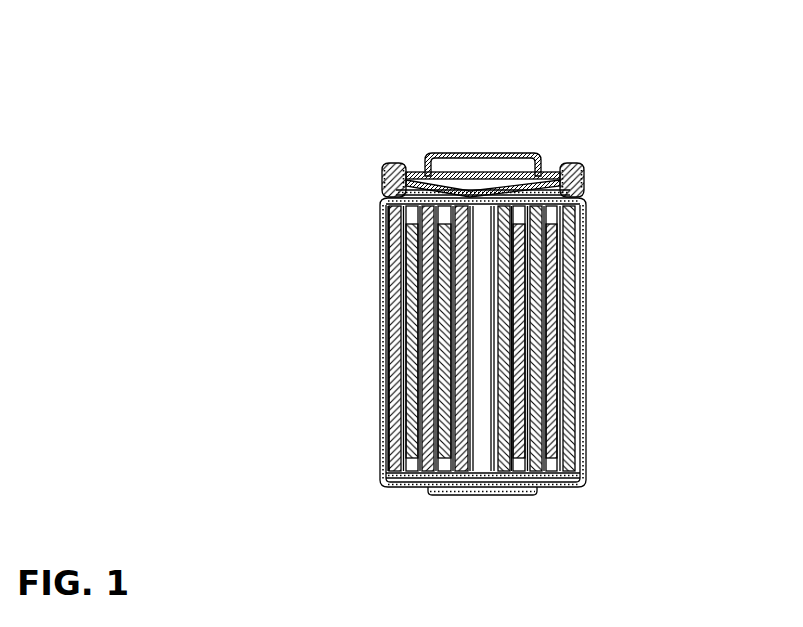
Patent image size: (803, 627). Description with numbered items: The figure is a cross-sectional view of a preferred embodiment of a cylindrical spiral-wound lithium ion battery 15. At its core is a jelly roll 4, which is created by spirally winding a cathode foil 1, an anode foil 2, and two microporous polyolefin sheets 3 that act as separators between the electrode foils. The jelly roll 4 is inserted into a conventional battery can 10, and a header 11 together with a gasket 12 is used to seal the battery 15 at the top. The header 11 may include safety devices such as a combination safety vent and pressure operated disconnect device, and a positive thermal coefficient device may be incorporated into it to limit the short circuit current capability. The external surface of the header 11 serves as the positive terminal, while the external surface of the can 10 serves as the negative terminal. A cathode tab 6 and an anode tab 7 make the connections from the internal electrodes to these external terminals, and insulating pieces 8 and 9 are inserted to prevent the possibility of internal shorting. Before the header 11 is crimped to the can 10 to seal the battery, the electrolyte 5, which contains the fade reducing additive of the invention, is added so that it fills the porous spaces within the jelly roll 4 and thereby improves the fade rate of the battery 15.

The cathode foil 1 is at (550, 386).
The anode foil 2 is at (391, 386).
The microporous polyolefin sheets 3 is at (401, 341).
The jelly roll 4 is at (387, 199).
The electrolyte 5 is at (534, 344).
The cathode tab 6 is at (460, 187).
The anode tab 7 is at (436, 491).
The insulating piece 8 is at (412, 191).
The insulating piece 9 is at (572, 490).
The battery can 10 is at (587, 263).
The header 11 is at (465, 149).
The gasket 12 is at (585, 167).
The battery 15 is at (565, 93).